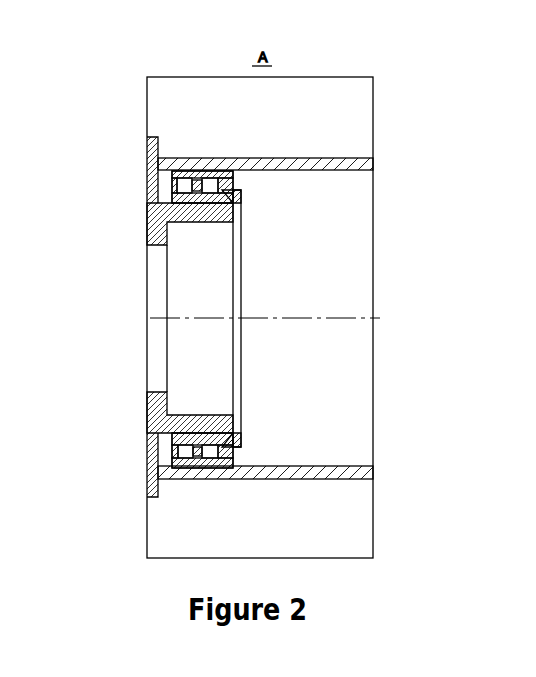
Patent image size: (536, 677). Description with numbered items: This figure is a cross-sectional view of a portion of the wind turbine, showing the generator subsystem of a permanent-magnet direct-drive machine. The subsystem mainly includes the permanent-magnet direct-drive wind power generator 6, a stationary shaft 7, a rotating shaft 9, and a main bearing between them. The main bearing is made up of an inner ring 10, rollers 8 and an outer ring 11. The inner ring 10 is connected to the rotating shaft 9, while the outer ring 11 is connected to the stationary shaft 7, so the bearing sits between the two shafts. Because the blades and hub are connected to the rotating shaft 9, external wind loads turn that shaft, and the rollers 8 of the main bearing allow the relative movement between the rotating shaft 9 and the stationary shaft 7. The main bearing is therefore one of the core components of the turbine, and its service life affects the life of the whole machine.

The permanent-magnet direct-drive wind power generator 6 is at (177, 523).
The stationary shaft 7 is at (178, 480).
The rollers 8 is at (202, 450).
The rotating shaft 9 is at (163, 422).
The inner ring 10 is at (158, 202).
The outer ring 11 is at (172, 172).